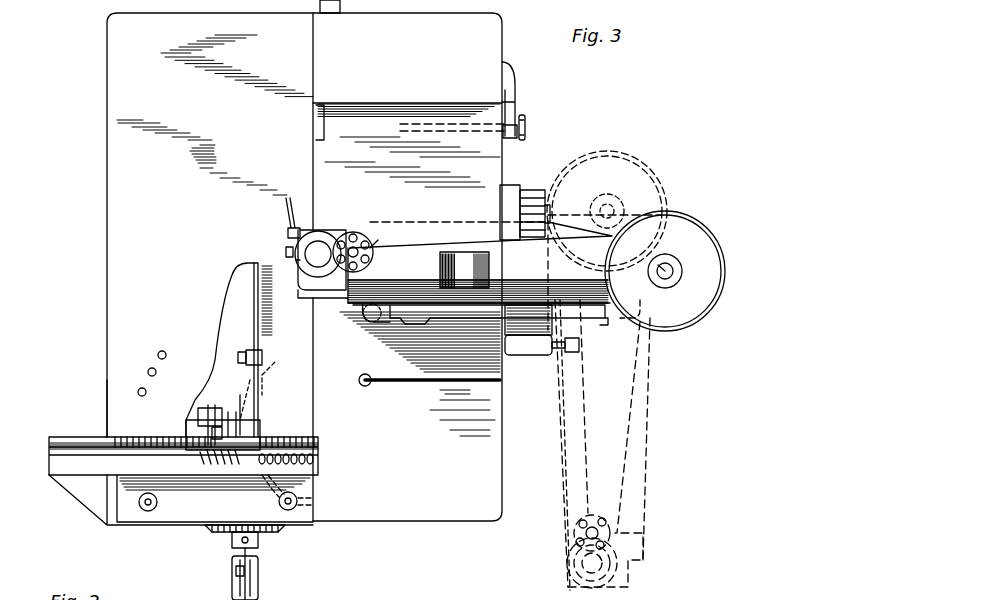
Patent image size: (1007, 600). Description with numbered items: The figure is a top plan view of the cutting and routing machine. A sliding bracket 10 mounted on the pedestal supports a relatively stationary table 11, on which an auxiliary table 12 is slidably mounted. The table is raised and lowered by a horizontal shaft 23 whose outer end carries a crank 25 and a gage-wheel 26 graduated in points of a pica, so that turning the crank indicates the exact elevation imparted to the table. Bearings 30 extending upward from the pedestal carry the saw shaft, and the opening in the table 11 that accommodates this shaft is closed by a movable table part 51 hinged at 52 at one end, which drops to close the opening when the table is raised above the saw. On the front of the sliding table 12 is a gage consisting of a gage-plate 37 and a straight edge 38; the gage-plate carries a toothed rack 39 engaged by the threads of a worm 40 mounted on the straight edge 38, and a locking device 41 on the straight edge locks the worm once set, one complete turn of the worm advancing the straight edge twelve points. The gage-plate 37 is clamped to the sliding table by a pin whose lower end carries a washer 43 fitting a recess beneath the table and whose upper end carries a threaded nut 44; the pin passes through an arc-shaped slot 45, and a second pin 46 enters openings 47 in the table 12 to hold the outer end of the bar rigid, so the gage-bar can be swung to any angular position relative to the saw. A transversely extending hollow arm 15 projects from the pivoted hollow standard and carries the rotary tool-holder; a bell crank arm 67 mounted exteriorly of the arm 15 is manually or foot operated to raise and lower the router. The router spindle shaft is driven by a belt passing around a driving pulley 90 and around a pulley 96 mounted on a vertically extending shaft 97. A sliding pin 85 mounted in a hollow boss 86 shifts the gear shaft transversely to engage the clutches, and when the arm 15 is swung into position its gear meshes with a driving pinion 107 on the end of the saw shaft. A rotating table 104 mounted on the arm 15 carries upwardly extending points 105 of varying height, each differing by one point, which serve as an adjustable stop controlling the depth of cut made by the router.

The sliding bracket 10 is at (107, 396).
The stationary table 11 is at (493, 46).
The auxiliary table 12 is at (110, 272).
The hollow arm 15 is at (480, 262).
The horizontal shaft 23 is at (238, 546).
The crank 25 is at (236, 572).
The gage-wheel 26 is at (262, 538).
The bearings 30 is at (498, 202).
The gage-plate 37 is at (174, 522).
The straight edge 38 is at (220, 335).
The toothed rack 39 is at (318, 459).
The worm 40 is at (212, 478).
The locking device 41 is at (223, 428).
The washer 43 is at (275, 532).
The threaded nut 44 is at (318, 499).
The arc-shaped slot 45 is at (266, 380).
The second pin 46 is at (144, 510).
The openings 47 is at (150, 380).
The movable table part 51 is at (503, 186).
The hinge 52 is at (522, 126).
The bell crank arm 67 is at (468, 316).
The sliding pin 85 is at (566, 352).
The hollow boss 86 is at (528, 357).
The driving pulley 90 is at (322, 243).
The pulley 96 is at (708, 306).
The vertically extending shaft 97 is at (668, 269).
The rotating table 104 is at (355, 236).
The points 105 is at (372, 252).
The driving pinion 107 is at (548, 186).